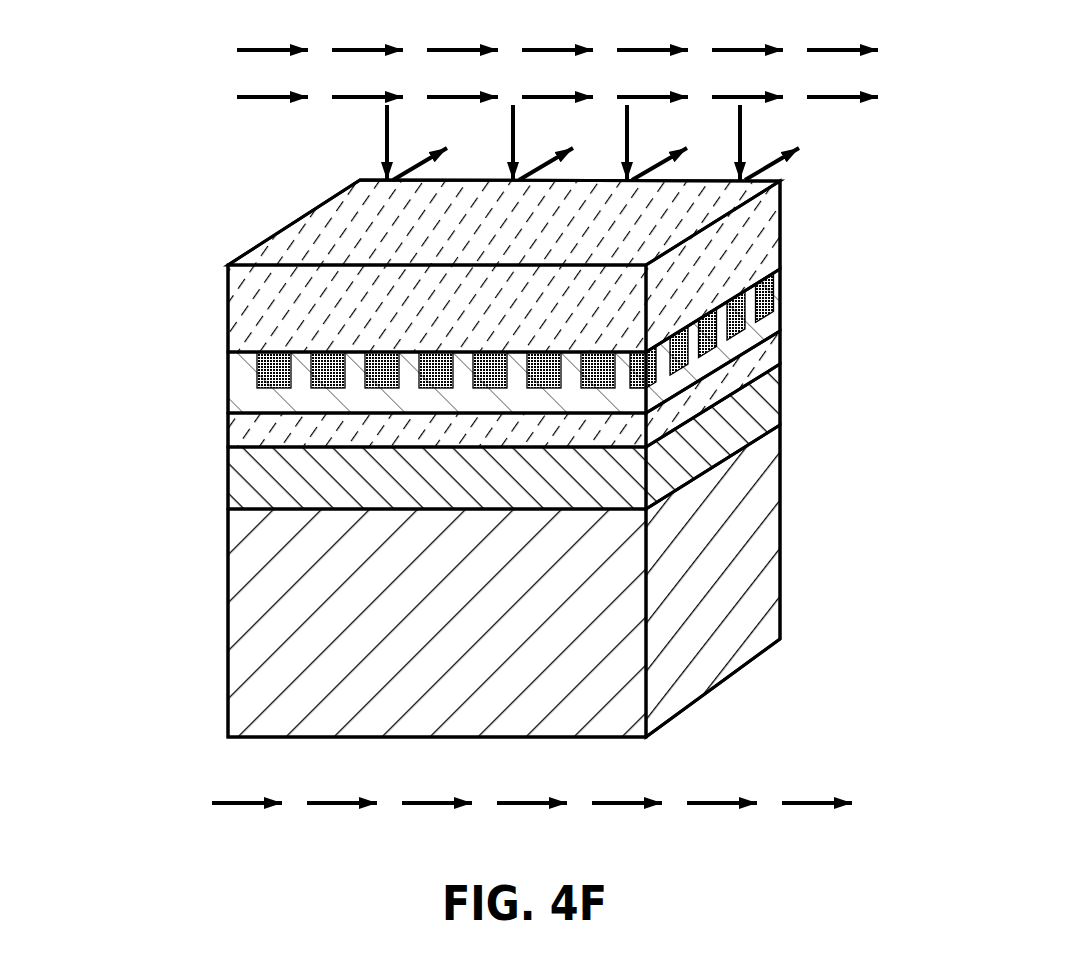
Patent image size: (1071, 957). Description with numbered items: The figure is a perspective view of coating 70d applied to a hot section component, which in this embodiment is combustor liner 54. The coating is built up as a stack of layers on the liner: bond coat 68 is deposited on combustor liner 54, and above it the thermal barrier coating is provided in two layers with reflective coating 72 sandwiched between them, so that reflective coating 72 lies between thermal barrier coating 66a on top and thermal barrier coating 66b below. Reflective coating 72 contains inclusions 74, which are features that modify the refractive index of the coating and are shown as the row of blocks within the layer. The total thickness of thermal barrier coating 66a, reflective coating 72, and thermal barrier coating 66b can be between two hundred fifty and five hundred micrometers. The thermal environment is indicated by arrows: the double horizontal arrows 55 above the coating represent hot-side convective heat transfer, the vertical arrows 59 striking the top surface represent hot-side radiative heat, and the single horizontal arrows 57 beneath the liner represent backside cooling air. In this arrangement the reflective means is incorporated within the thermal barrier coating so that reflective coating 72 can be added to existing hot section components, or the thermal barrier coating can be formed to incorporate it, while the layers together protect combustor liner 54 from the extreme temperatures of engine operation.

The coating 70d is at (427, 436).
The double horizontal arrows 55 is at (262, 97).
The single horizontal arrows 57 is at (247, 802).
The vertical arrows 59 is at (387, 128).
The thermal barrier coating 66a is at (228, 304).
The inclusions 74 is at (268, 370).
The reflective coating 72 is at (228, 390).
The thermal barrier coating 66b is at (228, 440).
The bond coat 68 is at (781, 393).
The combustor liner 54 is at (228, 620).